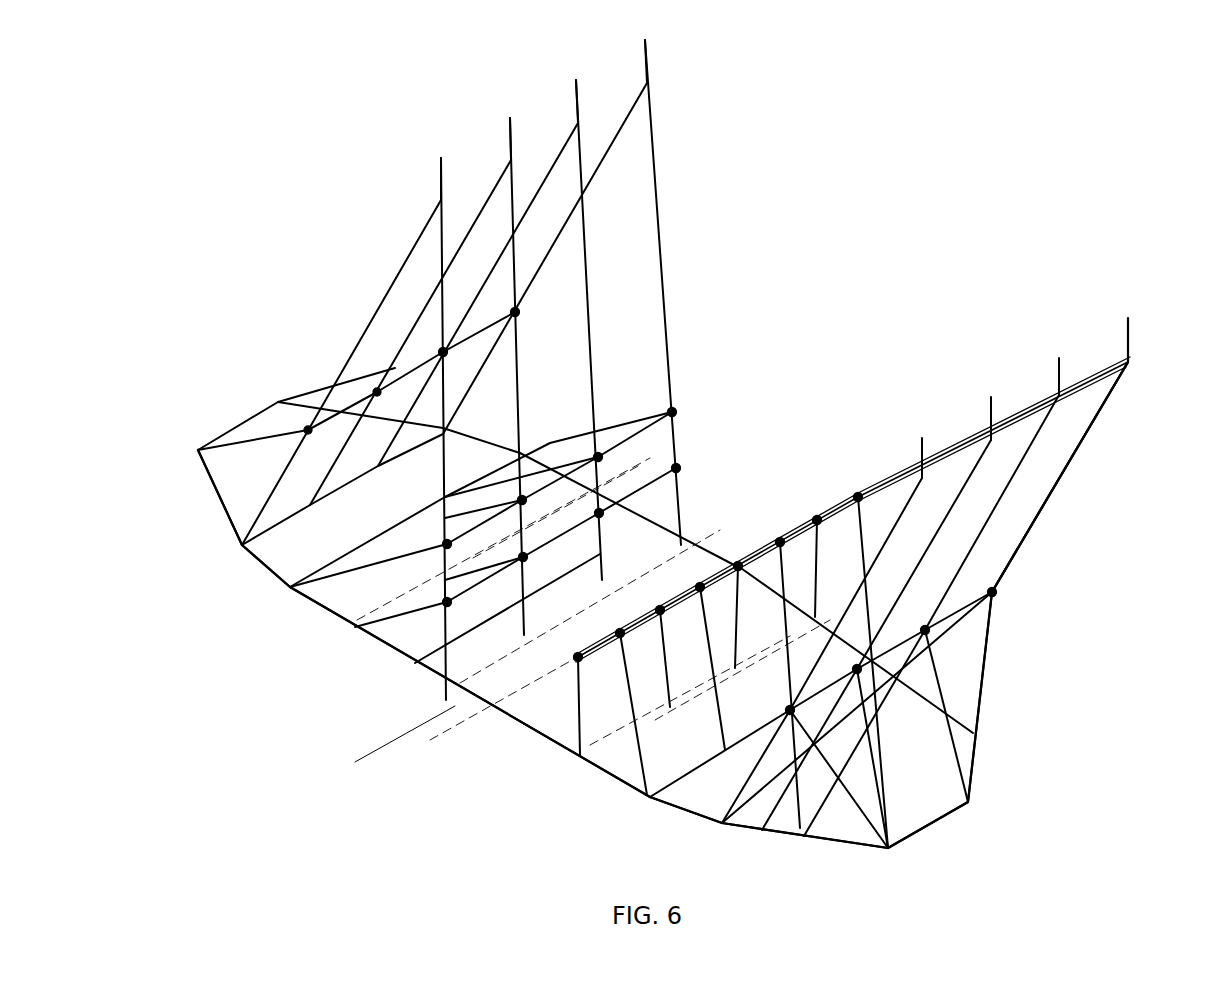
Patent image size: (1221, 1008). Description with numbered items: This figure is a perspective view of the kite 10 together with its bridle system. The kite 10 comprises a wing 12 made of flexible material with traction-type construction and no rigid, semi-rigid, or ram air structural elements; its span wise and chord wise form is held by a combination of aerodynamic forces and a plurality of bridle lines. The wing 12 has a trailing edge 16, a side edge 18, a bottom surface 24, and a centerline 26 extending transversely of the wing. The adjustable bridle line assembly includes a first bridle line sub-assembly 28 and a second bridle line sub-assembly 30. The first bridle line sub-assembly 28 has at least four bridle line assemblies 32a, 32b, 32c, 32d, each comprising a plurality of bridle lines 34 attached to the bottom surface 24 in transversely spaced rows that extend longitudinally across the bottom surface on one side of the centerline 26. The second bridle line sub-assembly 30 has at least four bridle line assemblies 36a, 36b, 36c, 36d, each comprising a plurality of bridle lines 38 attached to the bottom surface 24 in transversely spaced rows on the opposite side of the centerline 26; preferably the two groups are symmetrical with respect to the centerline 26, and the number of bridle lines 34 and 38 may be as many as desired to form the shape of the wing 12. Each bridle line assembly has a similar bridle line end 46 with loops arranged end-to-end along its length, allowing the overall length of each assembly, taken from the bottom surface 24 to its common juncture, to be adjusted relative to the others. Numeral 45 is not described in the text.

The kite 10 is at (1105, 152).
The wing 12 is at (830, 845).
The trailing edge 16 is at (382, 650).
The side edge 18 is at (968, 752).
The bottom surface 24 is at (705, 805).
The centerline 26 is at (393, 742).
The first bridle line sub-assembly 28 is at (260, 196).
The second bridle line sub-assembly 30 is at (1105, 540).
The bridle line assembly 32a is at (441, 475).
The bridle line assembly 32b is at (519, 410).
The bridle line assembly 32c is at (590, 340).
The bridle line assembly 32d is at (668, 325).
The bridle lines 34 is at (680, 468).
The bridle line assembly 36a is at (880, 515).
The bridle line assembly 36b is at (945, 510).
The bridle line assembly 36c is at (1026, 485).
The bridle line assembly 36d is at (1083, 440).
The bridle lines 38 is at (1024, 543).
The keel member 45 is at (991, 397).
The bridle line end 46 is at (510, 118).